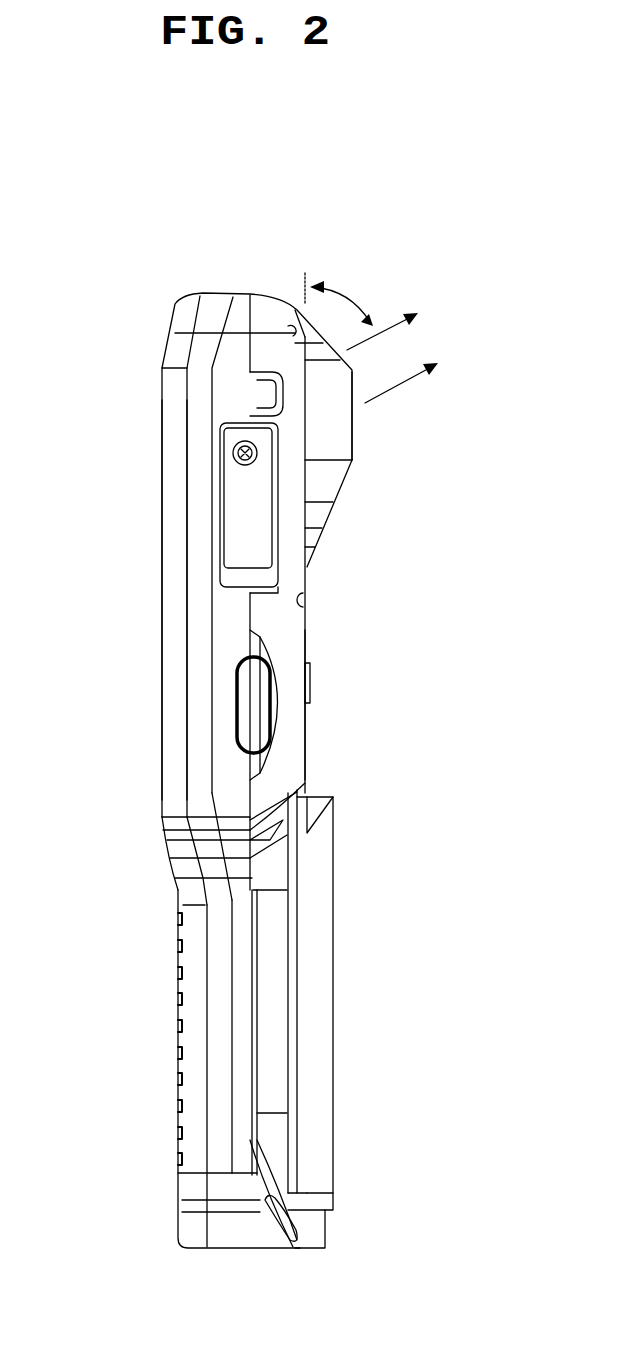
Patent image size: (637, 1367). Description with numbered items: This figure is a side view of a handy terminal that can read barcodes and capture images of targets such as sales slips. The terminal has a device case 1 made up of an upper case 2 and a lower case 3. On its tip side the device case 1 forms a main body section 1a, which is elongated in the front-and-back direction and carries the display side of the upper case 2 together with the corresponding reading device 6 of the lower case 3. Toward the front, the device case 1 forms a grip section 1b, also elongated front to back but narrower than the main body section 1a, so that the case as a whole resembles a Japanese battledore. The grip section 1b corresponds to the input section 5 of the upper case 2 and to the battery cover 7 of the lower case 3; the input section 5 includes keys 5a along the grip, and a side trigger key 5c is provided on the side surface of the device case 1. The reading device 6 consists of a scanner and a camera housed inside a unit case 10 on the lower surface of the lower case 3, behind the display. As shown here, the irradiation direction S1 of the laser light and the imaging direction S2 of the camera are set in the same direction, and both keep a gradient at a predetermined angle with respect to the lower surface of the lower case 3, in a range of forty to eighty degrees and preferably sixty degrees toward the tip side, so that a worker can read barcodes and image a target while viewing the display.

The device case 1 is at (175, 300).
The main body section 1a is at (232, 402).
The grip section 1b is at (297, 953).
The upper case 2 is at (177, 628).
The lower case 3 is at (290, 622).
The input section 5 is at (168, 1063).
The ribs 5a is at (173, 1017).
The side trigger key 5c is at (253, 703).
The reading device 6 is at (360, 433).
The battery cover 7 is at (313, 1052).
The unit case 10 is at (330, 458).
The irradiation direction S1 is at (393, 393).
The imaging direction S2 is at (393, 335).